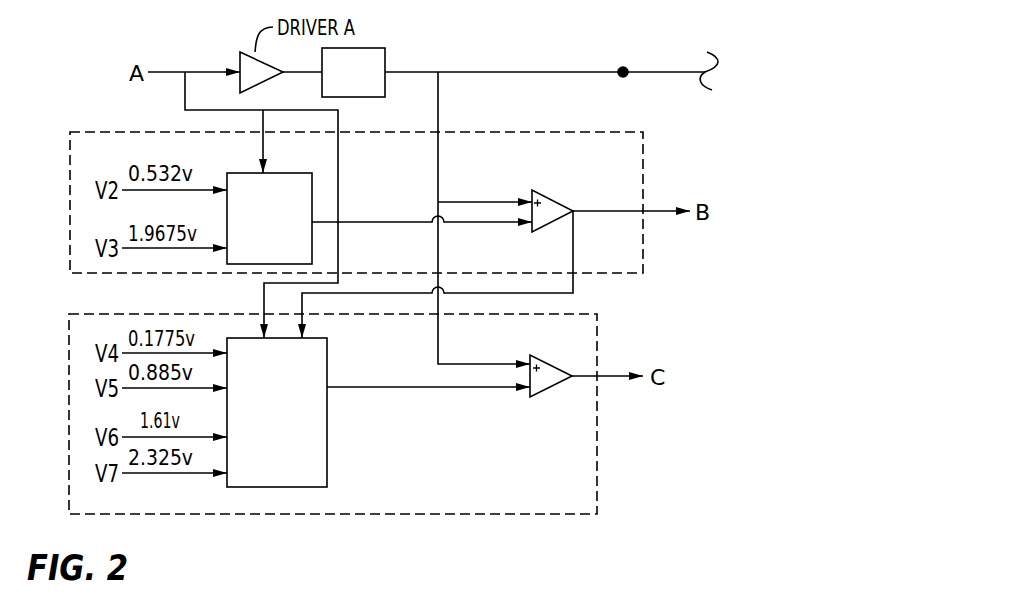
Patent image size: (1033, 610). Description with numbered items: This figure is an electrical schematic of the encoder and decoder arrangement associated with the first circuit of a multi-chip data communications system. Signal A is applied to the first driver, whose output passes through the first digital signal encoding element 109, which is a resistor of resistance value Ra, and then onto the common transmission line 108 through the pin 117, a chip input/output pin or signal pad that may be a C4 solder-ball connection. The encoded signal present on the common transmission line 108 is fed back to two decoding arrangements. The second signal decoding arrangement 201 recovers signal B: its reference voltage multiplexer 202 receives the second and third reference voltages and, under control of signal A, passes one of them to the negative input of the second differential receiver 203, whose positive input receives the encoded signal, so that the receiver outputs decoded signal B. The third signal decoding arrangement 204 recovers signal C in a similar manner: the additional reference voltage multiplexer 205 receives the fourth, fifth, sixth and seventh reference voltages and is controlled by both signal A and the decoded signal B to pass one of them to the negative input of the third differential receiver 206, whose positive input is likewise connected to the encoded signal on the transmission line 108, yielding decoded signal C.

The common transmission line 108 is at (680, 72).
The first digital signal encoding element 109 is at (385, 56).
The pin 117 is at (623, 67).
The second signal decoding arrangement 201 is at (643, 156).
The reference voltage multiplexer 202 is at (300, 248).
The second differential receiver 203 is at (553, 196).
The third signal decoding arrangement 204 is at (597, 485).
The additional reference voltage multiplexer 205 is at (311, 472).
The third differential receiver 206 is at (551, 388).